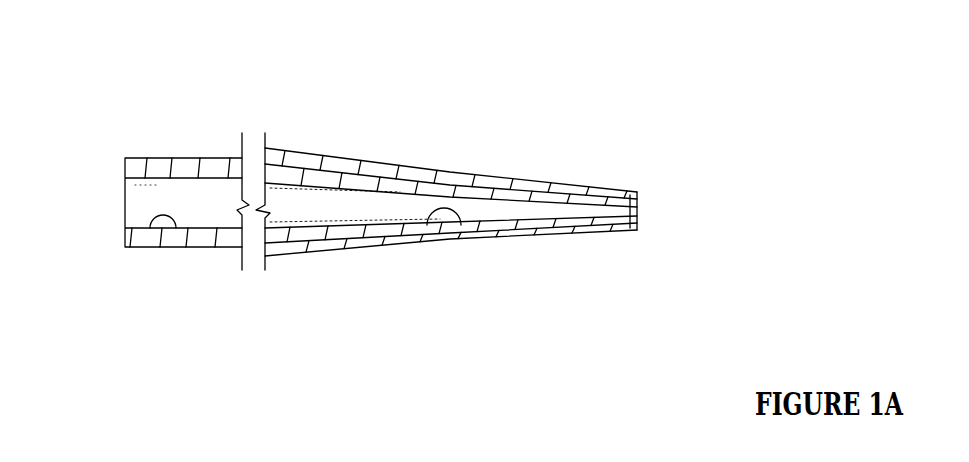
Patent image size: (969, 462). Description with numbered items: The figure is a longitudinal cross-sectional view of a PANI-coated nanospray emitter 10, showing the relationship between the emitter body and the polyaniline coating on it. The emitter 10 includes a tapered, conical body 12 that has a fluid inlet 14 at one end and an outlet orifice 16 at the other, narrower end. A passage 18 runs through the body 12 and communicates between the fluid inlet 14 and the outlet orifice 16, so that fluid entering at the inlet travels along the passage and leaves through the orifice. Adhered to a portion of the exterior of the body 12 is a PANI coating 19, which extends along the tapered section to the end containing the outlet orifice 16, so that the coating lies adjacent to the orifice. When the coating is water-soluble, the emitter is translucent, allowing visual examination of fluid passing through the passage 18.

The emitter 10 is at (496, 132).
The tapered body 12 is at (156, 167).
The fluid inlet 14 is at (125, 225).
The outlet orifice 16 is at (640, 213).
The passage 18 is at (172, 230).
The PANI coating 19 is at (540, 182).